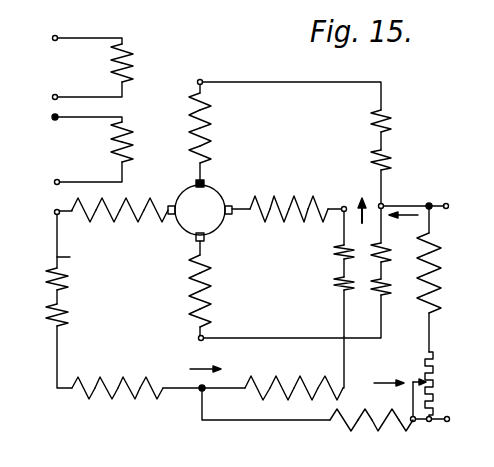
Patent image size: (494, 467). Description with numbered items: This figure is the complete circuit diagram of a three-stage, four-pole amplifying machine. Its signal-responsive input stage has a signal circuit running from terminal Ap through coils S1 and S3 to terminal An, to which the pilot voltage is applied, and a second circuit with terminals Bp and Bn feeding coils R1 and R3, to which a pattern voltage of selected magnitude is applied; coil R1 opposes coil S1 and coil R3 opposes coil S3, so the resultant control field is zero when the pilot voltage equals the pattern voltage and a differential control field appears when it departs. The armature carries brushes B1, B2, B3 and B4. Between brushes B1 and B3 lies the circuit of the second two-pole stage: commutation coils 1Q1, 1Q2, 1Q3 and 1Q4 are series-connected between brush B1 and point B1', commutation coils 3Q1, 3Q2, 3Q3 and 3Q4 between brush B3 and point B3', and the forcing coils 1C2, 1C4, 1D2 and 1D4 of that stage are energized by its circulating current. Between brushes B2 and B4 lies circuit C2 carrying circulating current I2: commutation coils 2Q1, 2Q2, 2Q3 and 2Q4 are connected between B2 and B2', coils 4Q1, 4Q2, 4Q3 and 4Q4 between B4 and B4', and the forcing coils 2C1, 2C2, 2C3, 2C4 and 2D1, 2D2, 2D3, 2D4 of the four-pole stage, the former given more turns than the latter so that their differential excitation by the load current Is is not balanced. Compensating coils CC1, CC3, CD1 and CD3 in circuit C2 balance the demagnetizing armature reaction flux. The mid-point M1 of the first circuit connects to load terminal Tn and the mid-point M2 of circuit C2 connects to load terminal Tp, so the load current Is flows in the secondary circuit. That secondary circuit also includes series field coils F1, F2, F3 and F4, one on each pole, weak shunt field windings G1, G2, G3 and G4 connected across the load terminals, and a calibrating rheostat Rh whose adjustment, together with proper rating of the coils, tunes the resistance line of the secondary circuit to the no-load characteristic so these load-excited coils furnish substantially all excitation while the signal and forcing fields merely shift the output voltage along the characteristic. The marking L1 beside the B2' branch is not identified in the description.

The terminal Bp is at (52, 38).
The terminal Bn is at (52, 97).
The terminal Ap is at (52, 117).
The terminal An is at (54, 182).
The coil R1 is at (112, 58).
The coil R3 is at (111, 75).
The signal coil S1 is at (112, 136).
The signal coil S3 is at (112, 154).
The circuit point B4' is at (31, 209).
The commutation coil 4Q3 is at (81, 210).
The commutation coil 4Q2 is at (112, 219).
The commutation coil 4Q1 is at (132, 210).
The commutation coil 4Q4 is at (162, 220).
The circuit C2 is at (70, 257).
The compensating coil CD1 is at (68, 281).
The compensating coil CD3 is at (68, 316).
The forcing coil 2C1 is at (87, 398).
The forcing coil 2C2 is at (110, 381).
The forcing coil 2C3 is at (136, 399).
The forcing coil 2C4 is at (166, 380).
The circuit point B1' is at (215, 69).
The commutation coil 1Q4 is at (209, 99).
The commutation coil 1Q3 is at (209, 117).
The commutation coil 1Q2 is at (209, 134).
The commutation coil 1Q1 is at (209, 151).
The brush B1 is at (222, 174).
The brush B2 is at (238, 220).
The brush B3 is at (184, 247).
The brush B4 is at (180, 189).
The commutation coil 2Q2 is at (259, 206).
The commutation coil 2Q3 is at (285, 220).
The commutation coil 2Q4 is at (298, 206).
The commutation coil 2Q1 is at (323, 220).
The circuit point B2' is at (354, 196).
The current L1 is at (356, 219).
The compensating coil CC1 is at (334, 254).
The compensating coil CC3 is at (334, 285).
The commutation coil 3Q3 is at (211, 259).
The commutation coil 3Q4 is at (211, 277).
The commutation coil 3Q1 is at (211, 295).
The commutation coil 3Q2 is at (211, 313).
The circuit point B3' is at (179, 336).
The forcing coil 1C2 is at (391, 118).
The forcing coil 1C4 is at (391, 158).
The mid-point M1 is at (384, 205).
The load terminal Tn is at (448, 204).
The load current Is is at (414, 233).
The forcing coil 1D2 is at (396, 249).
The forcing coil 1D4 is at (396, 282).
The shunt field winding G1 is at (441, 243).
The shunt field winding G2 is at (441, 260).
The shunt field winding G3 is at (441, 279).
The shunt field winding G4 is at (441, 304).
The calibrating rheostat Rh is at (425, 359).
The load terminal Tp is at (449, 417).
The series field coil F1 is at (343, 427).
The series field coil F2 is at (364, 414).
The series field coil F3 is at (392, 428).
The series field coil F4 is at (405, 414).
The mid-point M2 is at (200, 391).
The circulating current I2 is at (205, 362).
The forcing coil 2D1 is at (261, 397).
The forcing coil 2D2 is at (282, 378).
The forcing coil 2D3 is at (311, 399).
The forcing coil 2D4 is at (328, 379).